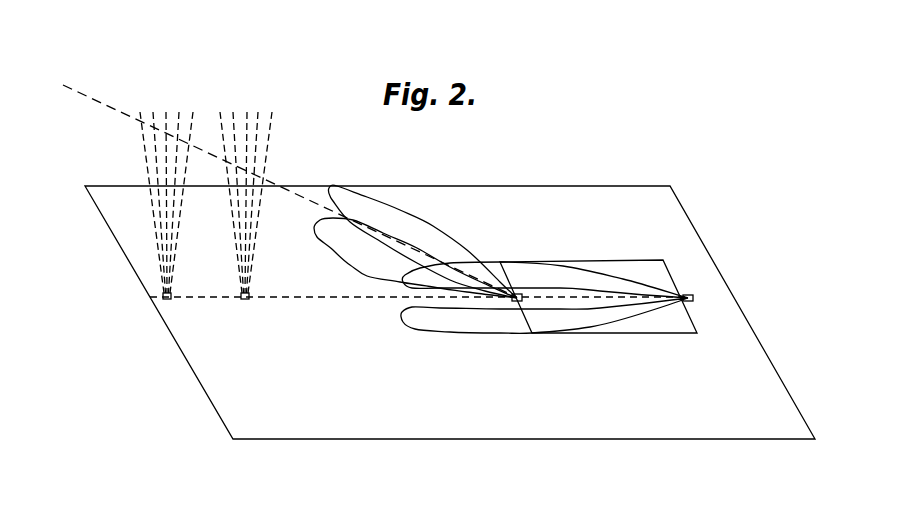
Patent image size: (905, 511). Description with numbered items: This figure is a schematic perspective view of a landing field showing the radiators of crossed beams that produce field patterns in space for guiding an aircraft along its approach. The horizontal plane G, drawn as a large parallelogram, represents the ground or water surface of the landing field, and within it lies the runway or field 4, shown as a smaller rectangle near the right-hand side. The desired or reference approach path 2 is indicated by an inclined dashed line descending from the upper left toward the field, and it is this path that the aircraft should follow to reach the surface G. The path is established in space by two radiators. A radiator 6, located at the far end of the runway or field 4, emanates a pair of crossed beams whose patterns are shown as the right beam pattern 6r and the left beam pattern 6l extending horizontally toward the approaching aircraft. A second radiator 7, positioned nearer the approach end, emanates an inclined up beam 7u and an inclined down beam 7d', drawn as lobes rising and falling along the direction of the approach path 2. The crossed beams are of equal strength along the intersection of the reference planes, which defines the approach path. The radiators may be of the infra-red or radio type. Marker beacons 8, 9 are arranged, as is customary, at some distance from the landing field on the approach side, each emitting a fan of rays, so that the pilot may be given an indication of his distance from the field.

The inclined approach path 2 is at (214, 156).
The runway or field 4 is at (638, 262).
The radiator 6 is at (697, 291).
The left beam pattern 6l is at (564, 267).
The right beam pattern 6r is at (511, 334).
The radiator 7 is at (513, 301).
The up beam 7u is at (426, 219).
The down beam 7d' is at (415, 258).
The marker beacon 8 is at (245, 300).
The marker beacon 9 is at (169, 300).
The horizontal plane G is at (630, 191).